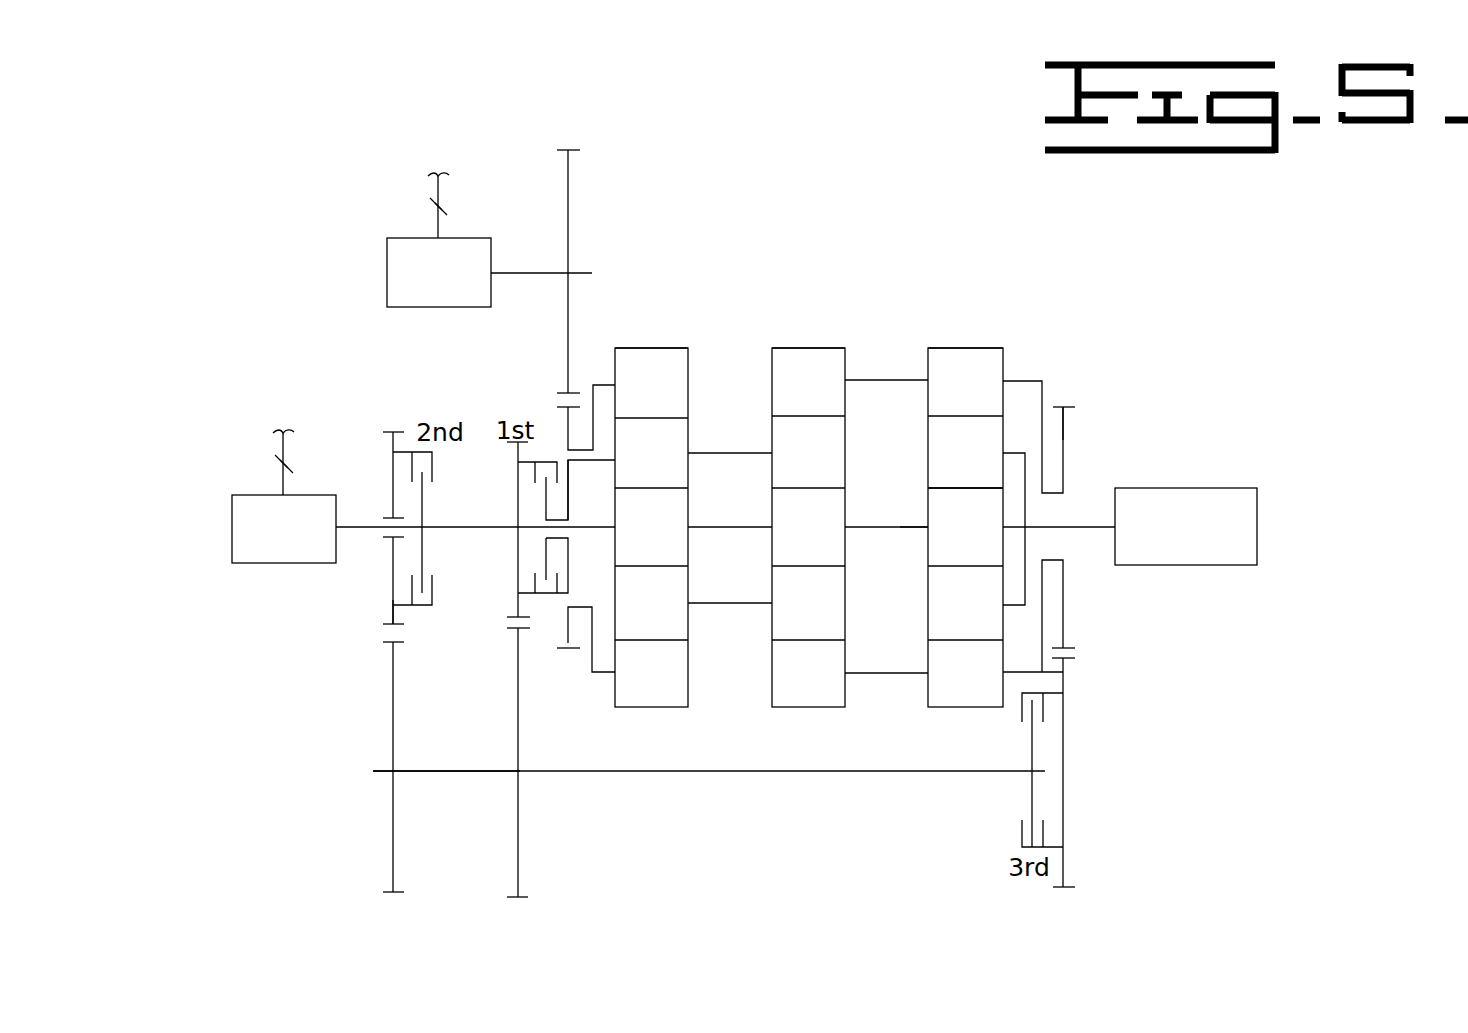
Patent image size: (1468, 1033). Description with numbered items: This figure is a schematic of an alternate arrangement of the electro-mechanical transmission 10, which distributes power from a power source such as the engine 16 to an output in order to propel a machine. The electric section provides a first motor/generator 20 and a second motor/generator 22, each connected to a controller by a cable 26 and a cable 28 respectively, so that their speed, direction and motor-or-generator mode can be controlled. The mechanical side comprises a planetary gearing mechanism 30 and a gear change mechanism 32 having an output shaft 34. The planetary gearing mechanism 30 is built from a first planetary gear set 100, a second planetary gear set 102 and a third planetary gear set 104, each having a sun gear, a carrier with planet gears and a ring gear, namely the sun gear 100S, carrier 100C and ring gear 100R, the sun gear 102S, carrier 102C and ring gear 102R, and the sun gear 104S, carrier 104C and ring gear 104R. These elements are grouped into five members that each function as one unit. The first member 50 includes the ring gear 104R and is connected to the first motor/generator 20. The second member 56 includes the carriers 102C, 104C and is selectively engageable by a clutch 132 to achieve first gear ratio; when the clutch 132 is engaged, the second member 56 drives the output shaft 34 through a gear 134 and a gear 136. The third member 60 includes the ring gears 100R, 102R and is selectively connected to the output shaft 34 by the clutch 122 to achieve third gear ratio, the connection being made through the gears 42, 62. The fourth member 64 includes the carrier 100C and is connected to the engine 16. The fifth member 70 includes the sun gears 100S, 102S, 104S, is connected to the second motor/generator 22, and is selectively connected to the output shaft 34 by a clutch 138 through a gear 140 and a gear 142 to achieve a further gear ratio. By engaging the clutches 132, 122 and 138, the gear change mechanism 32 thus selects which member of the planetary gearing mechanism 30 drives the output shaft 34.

The electro-mechanical transmission 10 is at (228, 653).
The engine 16 is at (1200, 488).
The first motor/generator 20 is at (387, 278).
The second motor/generator 22 is at (232, 527).
The cable 26 is at (441, 181).
The cable 28 is at (285, 442).
The planetary gearing mechanism 30 is at (878, 260).
The gear change mechanism 32 is at (283, 830).
The output shaft 34 is at (838, 771).
The gear 42 is at (1065, 673).
The first member 50 is at (593, 385).
The second member 56 is at (607, 463).
The third member 60 is at (1032, 381).
The gear 62 is at (1065, 422).
The fourth member 64 is at (1025, 505).
The fifth member 70 is at (913, 530).
The first planetary gear set 100 is at (1005, 287).
The ring gear 100R is at (948, 348).
The carrier 100C is at (928, 473).
The sun gear 100S is at (928, 510).
The second planetary gear set 102 is at (823, 310).
The ring gear 102R is at (835, 348).
The carrier 102C is at (847, 432).
The sun gear 102S is at (847, 557).
The third planetary gear set 104 is at (673, 307).
The ring gear 104R is at (690, 350).
The carrier 104C is at (688, 437).
The sun gear 104S is at (688, 530).
The clutch 122 is at (1022, 823).
The clutch 132 is at (540, 597).
The gear 134 is at (518, 487).
The gear 136 is at (518, 700).
The clutch 138 is at (418, 605).
The gear 140 is at (393, 615).
The gear 142 is at (393, 683).